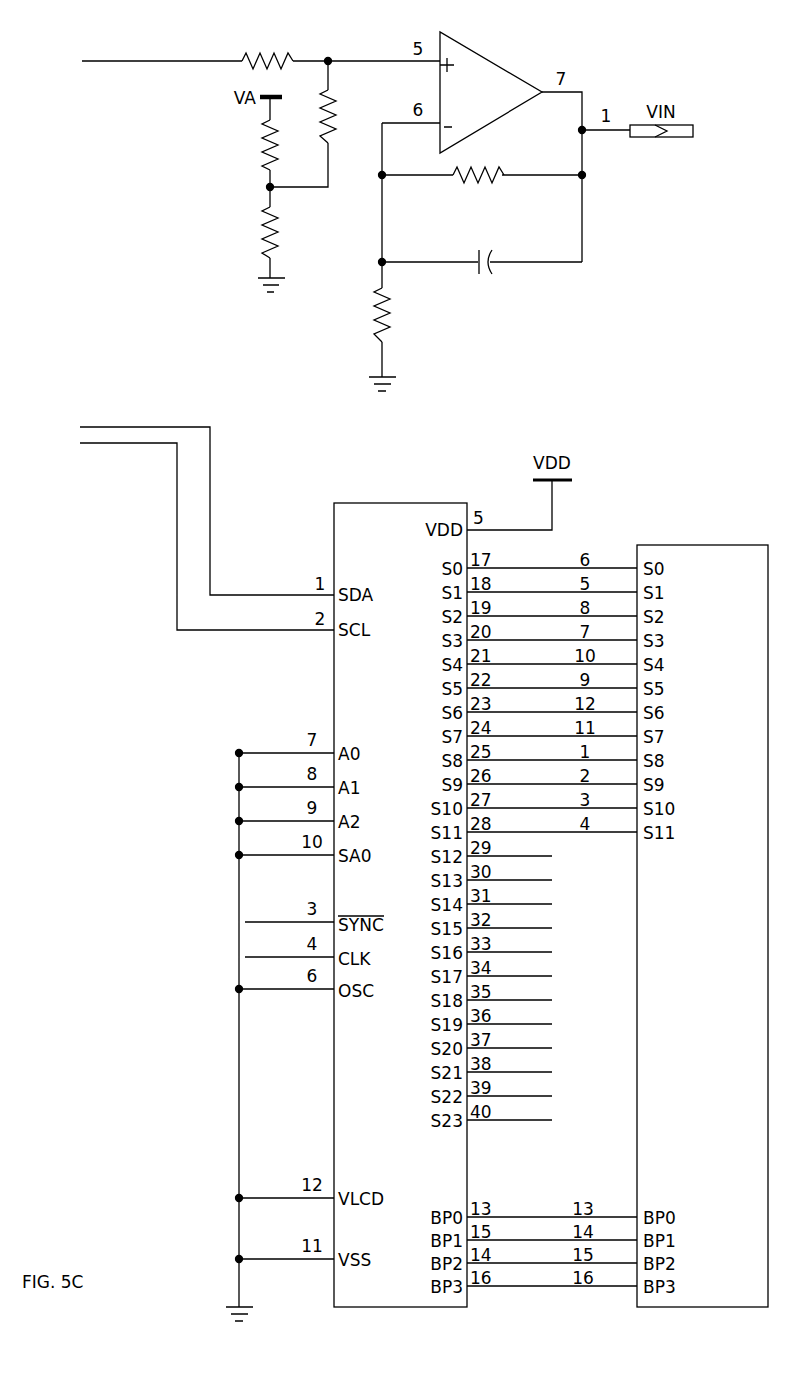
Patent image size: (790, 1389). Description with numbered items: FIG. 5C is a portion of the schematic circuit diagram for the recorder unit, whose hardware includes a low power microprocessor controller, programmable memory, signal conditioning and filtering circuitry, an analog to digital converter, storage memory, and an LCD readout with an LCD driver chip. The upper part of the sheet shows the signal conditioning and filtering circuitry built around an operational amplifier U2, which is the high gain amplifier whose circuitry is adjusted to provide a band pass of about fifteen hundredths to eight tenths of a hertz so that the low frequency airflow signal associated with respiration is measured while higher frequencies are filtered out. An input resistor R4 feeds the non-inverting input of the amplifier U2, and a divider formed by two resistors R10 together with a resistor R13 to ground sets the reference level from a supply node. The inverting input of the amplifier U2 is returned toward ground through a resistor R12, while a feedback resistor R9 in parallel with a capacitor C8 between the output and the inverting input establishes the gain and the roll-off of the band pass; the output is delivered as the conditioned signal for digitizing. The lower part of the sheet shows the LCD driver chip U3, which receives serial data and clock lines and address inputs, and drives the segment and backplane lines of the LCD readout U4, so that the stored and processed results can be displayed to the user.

The resistor R4 10M R4 is at (267, 37).
The resistor R10 1M R10 is at (301, 130).
The resistor R13 100k R13 is at (249, 232).
The feedback resistor R9 10M R9 is at (478, 177).
The resistor R12 1M R12 is at (401, 315).
The capacitor C8 .01 C8 is at (478, 266).
The operational amplifier U2:A U2 is at (491, 92).
The LCD driver P62256L U3 is at (400, 890).
The LCD display LCD1 U4 is at (702, 926).